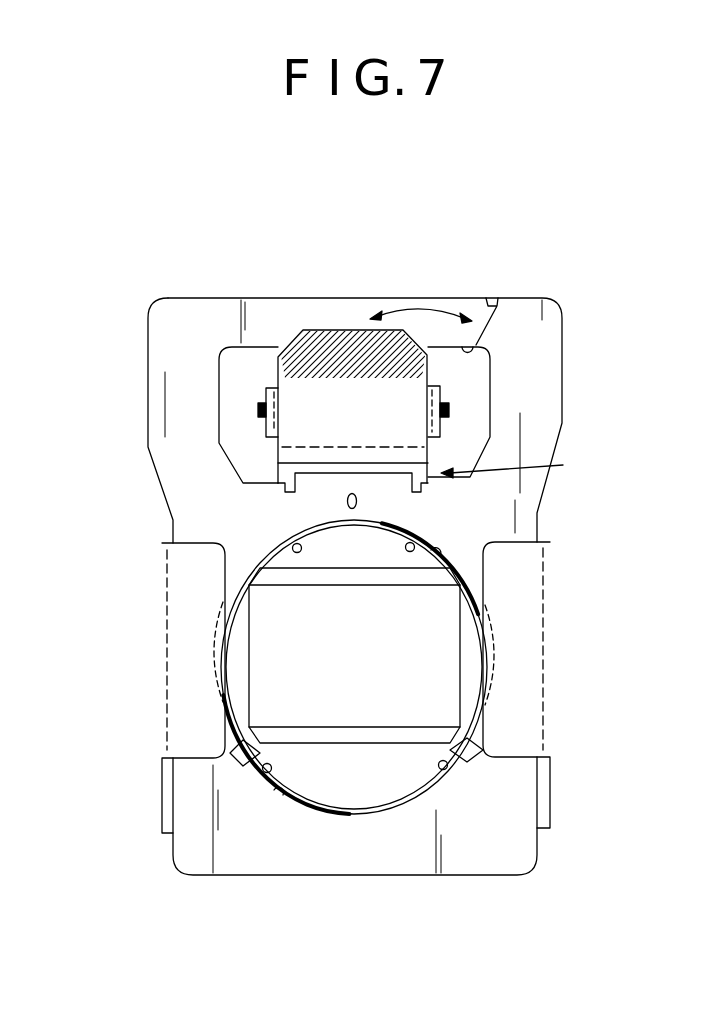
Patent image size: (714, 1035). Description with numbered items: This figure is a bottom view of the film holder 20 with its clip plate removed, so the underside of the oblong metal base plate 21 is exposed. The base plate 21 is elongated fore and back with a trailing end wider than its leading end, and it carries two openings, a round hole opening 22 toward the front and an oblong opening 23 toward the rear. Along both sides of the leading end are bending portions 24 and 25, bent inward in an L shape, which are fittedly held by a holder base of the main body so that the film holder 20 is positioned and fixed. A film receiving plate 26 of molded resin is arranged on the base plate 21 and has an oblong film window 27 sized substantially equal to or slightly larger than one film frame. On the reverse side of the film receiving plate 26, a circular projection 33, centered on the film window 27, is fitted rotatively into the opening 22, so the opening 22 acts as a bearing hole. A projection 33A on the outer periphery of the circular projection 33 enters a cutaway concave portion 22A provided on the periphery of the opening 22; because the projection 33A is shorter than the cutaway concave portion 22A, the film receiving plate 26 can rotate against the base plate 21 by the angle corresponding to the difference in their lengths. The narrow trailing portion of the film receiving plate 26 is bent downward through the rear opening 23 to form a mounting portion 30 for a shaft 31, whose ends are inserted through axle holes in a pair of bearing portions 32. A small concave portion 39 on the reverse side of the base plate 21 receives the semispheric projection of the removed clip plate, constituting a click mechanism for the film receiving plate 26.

The film holder 20 is at (455, 226).
The base plate 21 is at (562, 427).
The opening 22 is at (448, 553).
The cutaway concave portion 22A is at (280, 797).
The opening 23 is at (489, 299).
The bending portion 24 is at (518, 600).
The bending portion 25 is at (187, 606).
The film receiving plate 26 is at (520, 466).
The film window 27 is at (304, 720).
The mounting portion 30 is at (341, 344).
The shaft 31 is at (450, 410).
The bearing portions 32 is at (266, 399).
The circular projection 33 is at (370, 790).
The projection 33A is at (436, 780).
The concave portion 39 is at (344, 500).